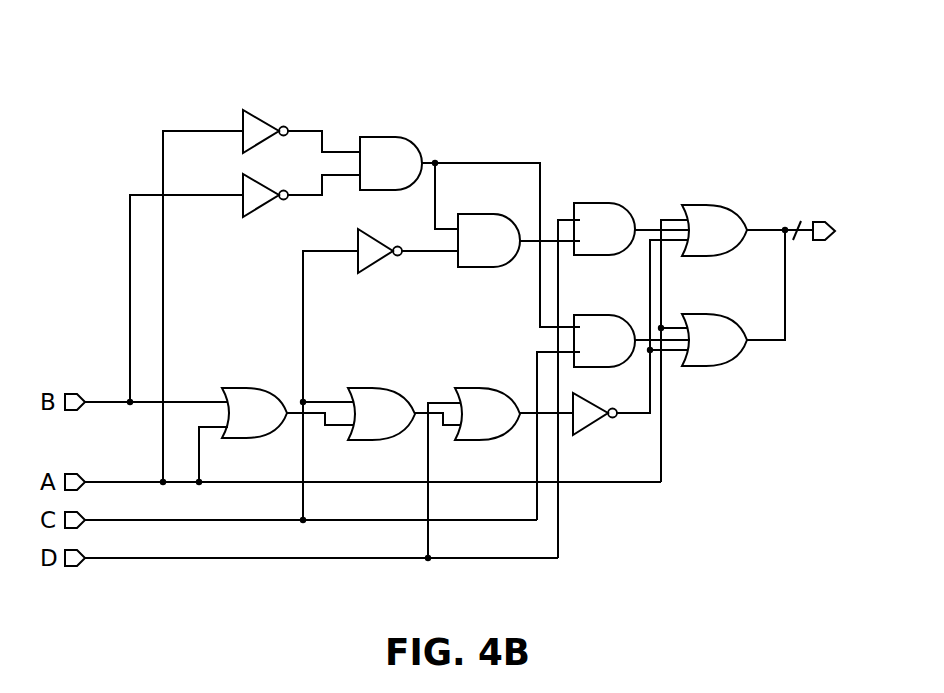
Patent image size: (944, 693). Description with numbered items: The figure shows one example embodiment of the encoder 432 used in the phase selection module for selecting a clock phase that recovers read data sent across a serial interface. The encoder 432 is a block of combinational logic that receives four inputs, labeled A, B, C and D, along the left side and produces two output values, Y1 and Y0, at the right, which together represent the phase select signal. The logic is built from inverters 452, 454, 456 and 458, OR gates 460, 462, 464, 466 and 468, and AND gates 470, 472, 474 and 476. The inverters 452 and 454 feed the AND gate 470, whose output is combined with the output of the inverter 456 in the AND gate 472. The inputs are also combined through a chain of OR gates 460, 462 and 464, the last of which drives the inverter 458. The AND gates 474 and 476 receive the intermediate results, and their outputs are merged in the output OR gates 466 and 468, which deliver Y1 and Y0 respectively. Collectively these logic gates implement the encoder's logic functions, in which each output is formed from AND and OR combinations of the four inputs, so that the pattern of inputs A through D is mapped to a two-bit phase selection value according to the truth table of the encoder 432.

The encoder 432 is at (371, 125).
The inverter 452 is at (263, 113).
The inverter 454 is at (268, 210).
The inverter 456 is at (383, 263).
The inverter 458 is at (597, 423).
The OR gate 460 is at (246, 384).
The OR gate 462 is at (374, 384).
The OR gate 464 is at (481, 384).
The OR gate 466 is at (704, 202).
The OR gate 468 is at (700, 368).
The AND gate 470 is at (413, 136).
The AND gate 472 is at (485, 268).
The AND gate 474 is at (600, 202).
The AND gate 476 is at (600, 313).